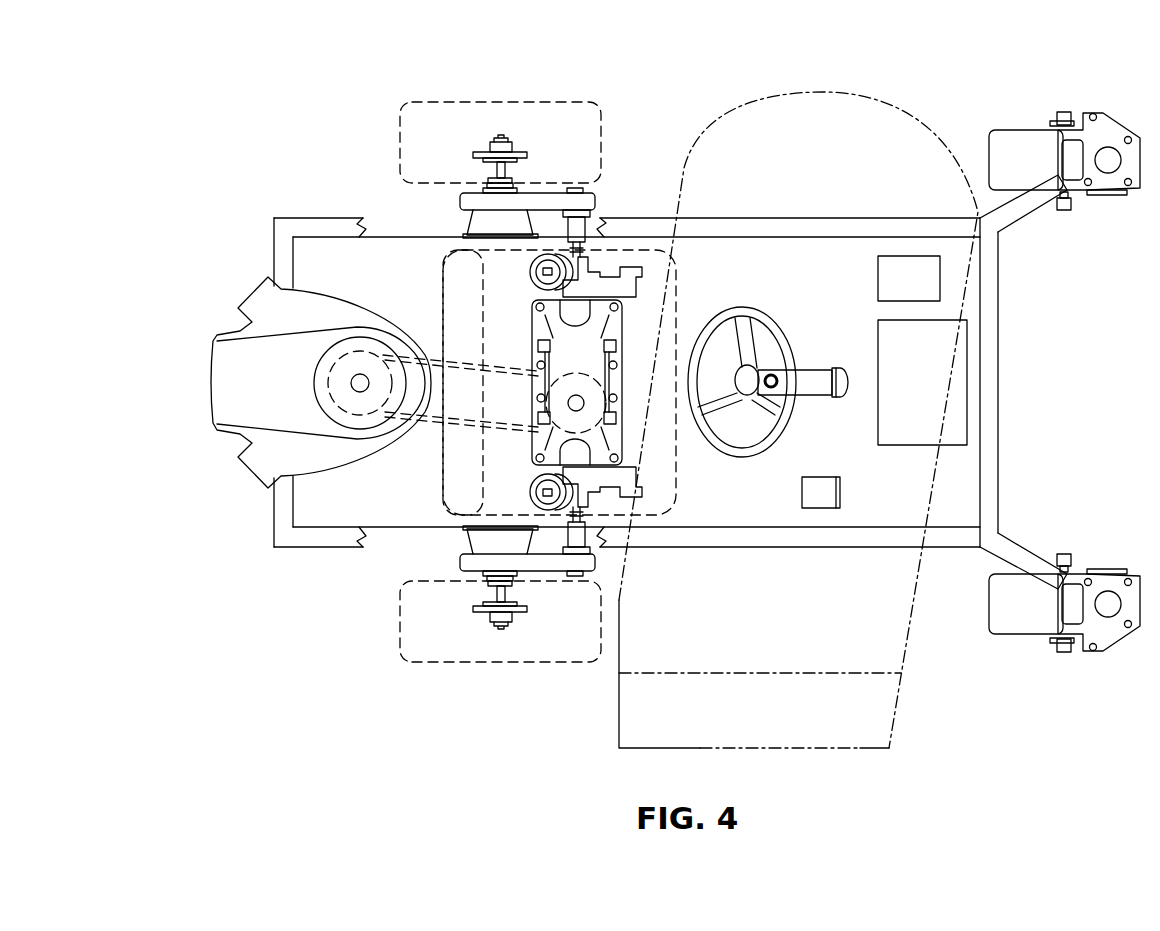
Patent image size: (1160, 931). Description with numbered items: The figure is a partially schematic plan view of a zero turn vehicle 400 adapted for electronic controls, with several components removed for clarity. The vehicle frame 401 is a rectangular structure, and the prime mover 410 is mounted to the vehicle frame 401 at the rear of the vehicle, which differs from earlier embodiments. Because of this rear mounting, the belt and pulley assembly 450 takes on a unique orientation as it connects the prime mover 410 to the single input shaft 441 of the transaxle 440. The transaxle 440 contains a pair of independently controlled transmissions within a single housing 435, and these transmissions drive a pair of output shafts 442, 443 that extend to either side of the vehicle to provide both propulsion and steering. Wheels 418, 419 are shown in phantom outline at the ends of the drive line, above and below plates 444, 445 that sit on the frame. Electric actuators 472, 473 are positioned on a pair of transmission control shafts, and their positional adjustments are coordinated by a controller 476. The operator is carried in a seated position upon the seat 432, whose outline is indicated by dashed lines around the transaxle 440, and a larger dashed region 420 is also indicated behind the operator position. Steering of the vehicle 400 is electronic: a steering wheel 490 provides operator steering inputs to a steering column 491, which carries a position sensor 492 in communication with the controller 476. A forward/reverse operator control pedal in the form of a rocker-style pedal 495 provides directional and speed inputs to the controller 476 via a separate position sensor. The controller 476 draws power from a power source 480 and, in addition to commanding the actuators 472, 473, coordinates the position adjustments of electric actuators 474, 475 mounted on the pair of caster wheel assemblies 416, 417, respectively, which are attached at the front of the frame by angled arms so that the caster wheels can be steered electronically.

The zero turn vehicle 400 is at (196, 79).
The vehicle frame 401 is at (808, 218).
The prime mover 410 is at (284, 394).
The caster wheel assembly 416 is at (1020, 130).
The caster wheel assembly 417 is at (1020, 634).
The front left wheel 418 is at (400, 122).
The rear left wheel 419 is at (400, 643).
The seat / canopy region 420 is at (761, 103).
The seat 432 is at (442, 334).
The housing 435 is at (546, 323).
The transaxle 440 is at (516, 445).
The input shaft 441 is at (578, 393).
The output shaft 442 is at (588, 243).
The output shaft 443 is at (587, 520).
The upper mounting plate 444 is at (466, 212).
The lower mounting plate 445 is at (466, 552).
The belt and pulley assembly 450 is at (540, 390).
The electric actuator 472 is at (546, 282).
The electric actuator 473 is at (546, 482).
The electric actuator 474 is at (1106, 131).
The electric actuator 475 is at (1105, 634).
The controller 476 is at (929, 289).
The power source 480 is at (942, 394).
The steering wheel 490 is at (741, 312).
The steering column 491 is at (808, 378).
The position sensor 492 is at (841, 388).
The rocker-style pedal 495 is at (802, 492).